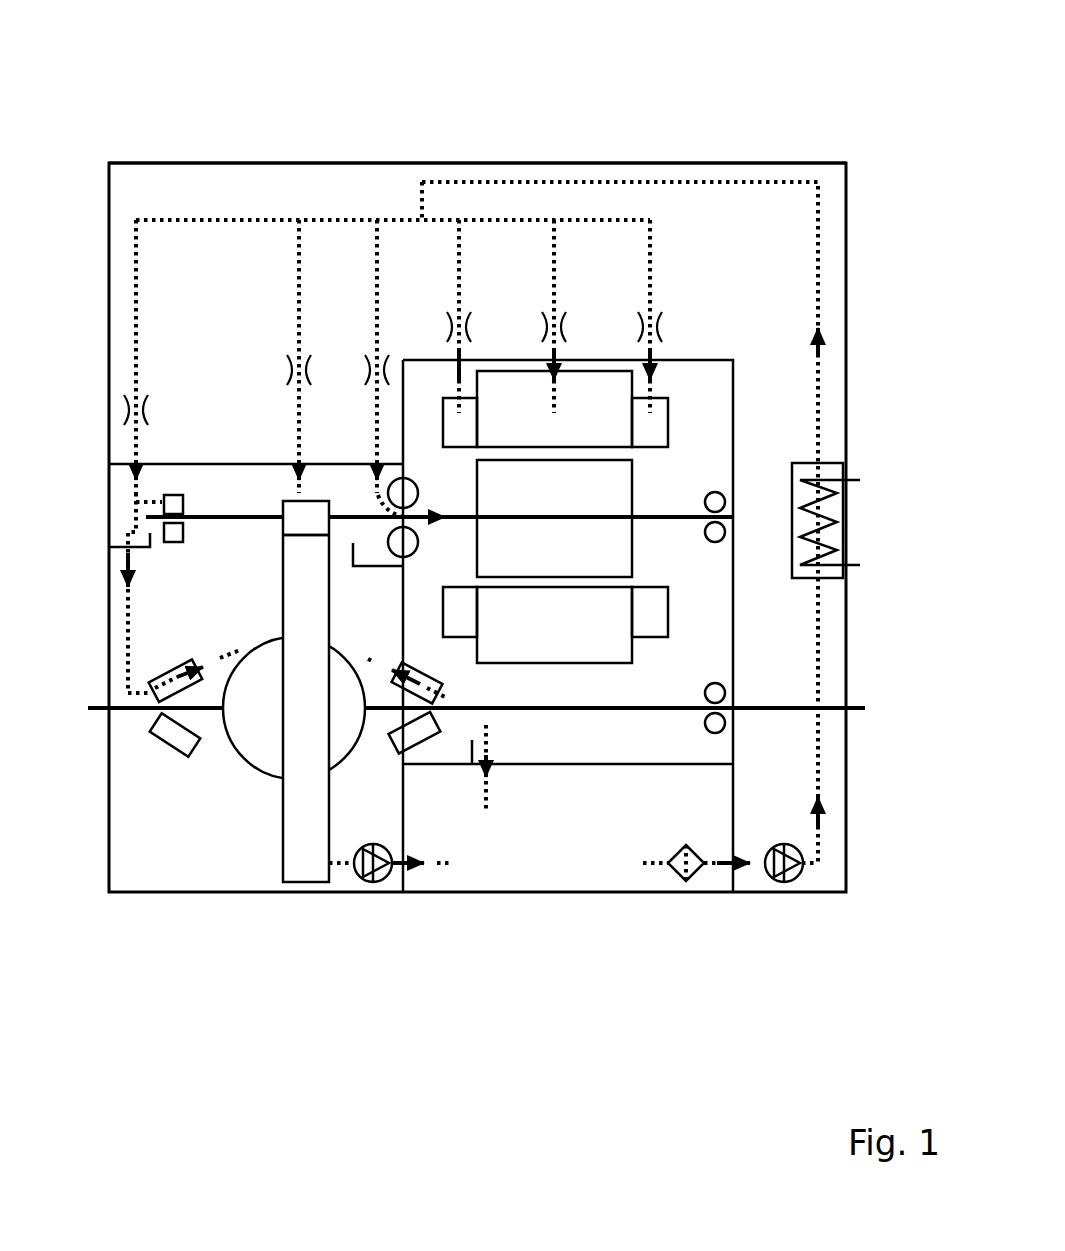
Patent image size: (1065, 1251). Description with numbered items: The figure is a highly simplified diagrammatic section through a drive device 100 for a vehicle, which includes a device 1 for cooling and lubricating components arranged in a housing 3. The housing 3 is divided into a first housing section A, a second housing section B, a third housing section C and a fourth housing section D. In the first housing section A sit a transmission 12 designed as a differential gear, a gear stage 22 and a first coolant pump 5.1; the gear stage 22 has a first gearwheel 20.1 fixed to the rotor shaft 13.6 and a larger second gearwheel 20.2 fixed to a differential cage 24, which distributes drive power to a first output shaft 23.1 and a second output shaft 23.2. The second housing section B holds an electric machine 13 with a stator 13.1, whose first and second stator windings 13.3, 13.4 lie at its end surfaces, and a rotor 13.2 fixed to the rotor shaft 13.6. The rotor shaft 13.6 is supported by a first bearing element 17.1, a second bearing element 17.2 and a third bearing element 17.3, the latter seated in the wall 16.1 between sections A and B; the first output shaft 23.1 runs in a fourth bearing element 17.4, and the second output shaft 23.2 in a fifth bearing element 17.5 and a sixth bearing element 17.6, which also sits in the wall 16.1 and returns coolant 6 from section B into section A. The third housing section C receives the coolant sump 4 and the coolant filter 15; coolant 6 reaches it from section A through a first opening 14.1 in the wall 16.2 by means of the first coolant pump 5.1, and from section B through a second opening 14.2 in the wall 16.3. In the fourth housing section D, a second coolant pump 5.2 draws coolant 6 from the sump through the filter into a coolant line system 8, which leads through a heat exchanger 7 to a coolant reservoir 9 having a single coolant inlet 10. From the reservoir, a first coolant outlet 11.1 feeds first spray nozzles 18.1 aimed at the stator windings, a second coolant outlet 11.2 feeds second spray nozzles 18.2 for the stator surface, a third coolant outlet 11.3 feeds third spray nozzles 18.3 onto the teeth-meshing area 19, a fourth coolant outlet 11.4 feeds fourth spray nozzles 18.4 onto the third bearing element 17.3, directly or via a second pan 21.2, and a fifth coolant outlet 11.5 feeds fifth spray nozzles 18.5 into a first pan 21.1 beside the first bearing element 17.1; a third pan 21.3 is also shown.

The device for cooling and lubricating 1 is at (757, 135).
The housing 3 is at (700, 163).
The coolant sump 4 is at (543, 835).
The first coolant pump 5.1 is at (362, 872).
The second coolant pump 5.2 is at (790, 882).
The coolant 6 is at (370, 368).
The heat exchanger 7 is at (855, 508).
The coolant line system 8 is at (553, 450).
The coolant reservoir 9 is at (663, 222).
The coolant inlet 10 is at (430, 508).
The first coolant outlet 11.1 is at (471, 243).
The second coolant outlet 11.2 is at (563, 232).
The third coolant outlet 11.3 is at (293, 330).
The fourth coolant outlet 11.4 is at (372, 330).
The fifth coolant outlet 11.5 is at (130, 232).
The transmission 12 is at (452, 720).
The electric machine 13 is at (733, 360).
The stator 13.1 is at (715, 745).
The rotor 13.2 is at (600, 503).
The first stator winding 13.3 is at (452, 417).
The second stator winding 13.4 is at (660, 422).
The rotor shaft 13.6 is at (678, 648).
The first opening 14.1 is at (397, 872).
The second opening 14.2 is at (573, 740).
The coolant filter 15 is at (700, 880).
The wall 16.1 is at (346, 566).
The wall 16.2 is at (440, 745).
The wall 16.3 is at (655, 865).
The first bearing element 17.1 is at (168, 483).
The second bearing element 17.2 is at (723, 550).
The third bearing element 17.3 is at (423, 485).
The fourth bearing element 17.4 is at (170, 765).
The fifth bearing element 17.5 is at (735, 800).
The sixth bearing element 17.6 is at (436, 660).
The first spray nozzle 18.1 is at (465, 350).
The second spray nozzle 18.2 is at (533, 350).
The third spray nozzle 18.3 is at (292, 478).
The fourth spray nozzle 18.4 is at (372, 478).
The fifth spray nozzle 18.5 is at (130, 405).
The teeth-meshing area 19 is at (293, 527).
The first gearwheel 20.1 is at (283, 492).
The second gearwheel 20.2 is at (215, 706).
The first pan 21.1 is at (148, 558).
The second pan 21.2 is at (480, 578).
The third pan 21.3 is at (452, 741).
The gear stage 22 is at (287, 900).
The first output shaft 23.1 is at (150, 733).
The second output shaft 23.2 is at (745, 710).
The differential cage 24 is at (236, 794).
The drive device 100 is at (165, 902).
The first housing section A is at (300, 713).
The second housing section B is at (745, 607).
The third housing section C is at (623, 860).
The fourth housing section D is at (762, 252).